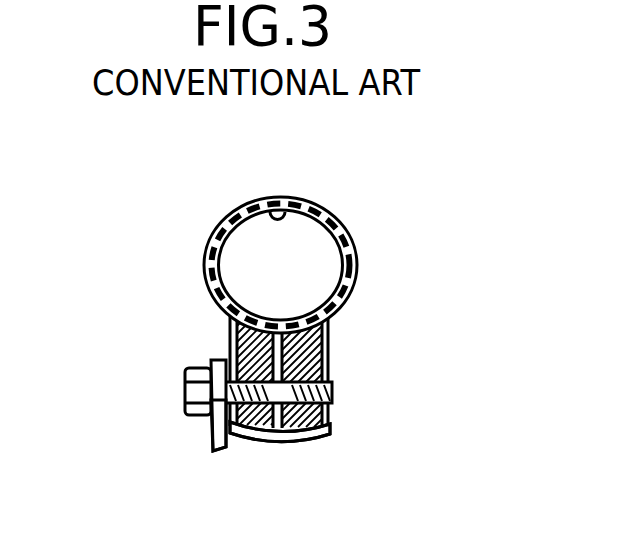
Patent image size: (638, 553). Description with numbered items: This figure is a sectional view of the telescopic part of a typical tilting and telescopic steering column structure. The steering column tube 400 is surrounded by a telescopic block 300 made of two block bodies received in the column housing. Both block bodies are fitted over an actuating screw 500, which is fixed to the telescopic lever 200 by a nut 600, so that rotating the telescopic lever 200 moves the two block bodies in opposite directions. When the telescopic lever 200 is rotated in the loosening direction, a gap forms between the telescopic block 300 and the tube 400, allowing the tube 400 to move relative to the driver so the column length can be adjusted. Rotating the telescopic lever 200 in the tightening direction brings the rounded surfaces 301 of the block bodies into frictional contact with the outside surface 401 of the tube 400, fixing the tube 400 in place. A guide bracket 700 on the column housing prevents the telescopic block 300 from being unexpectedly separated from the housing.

The tube 400 is at (295, 197).
The outside surface 401 is at (268, 332).
The rounded surfaces 301 is at (327, 343).
The telescopic block 300 is at (330, 427).
The guide bracket 700 is at (264, 441).
The actuating screw 500 is at (185, 394).
The nut 600 is at (198, 366).
The telescopic lever 200 is at (210, 440).